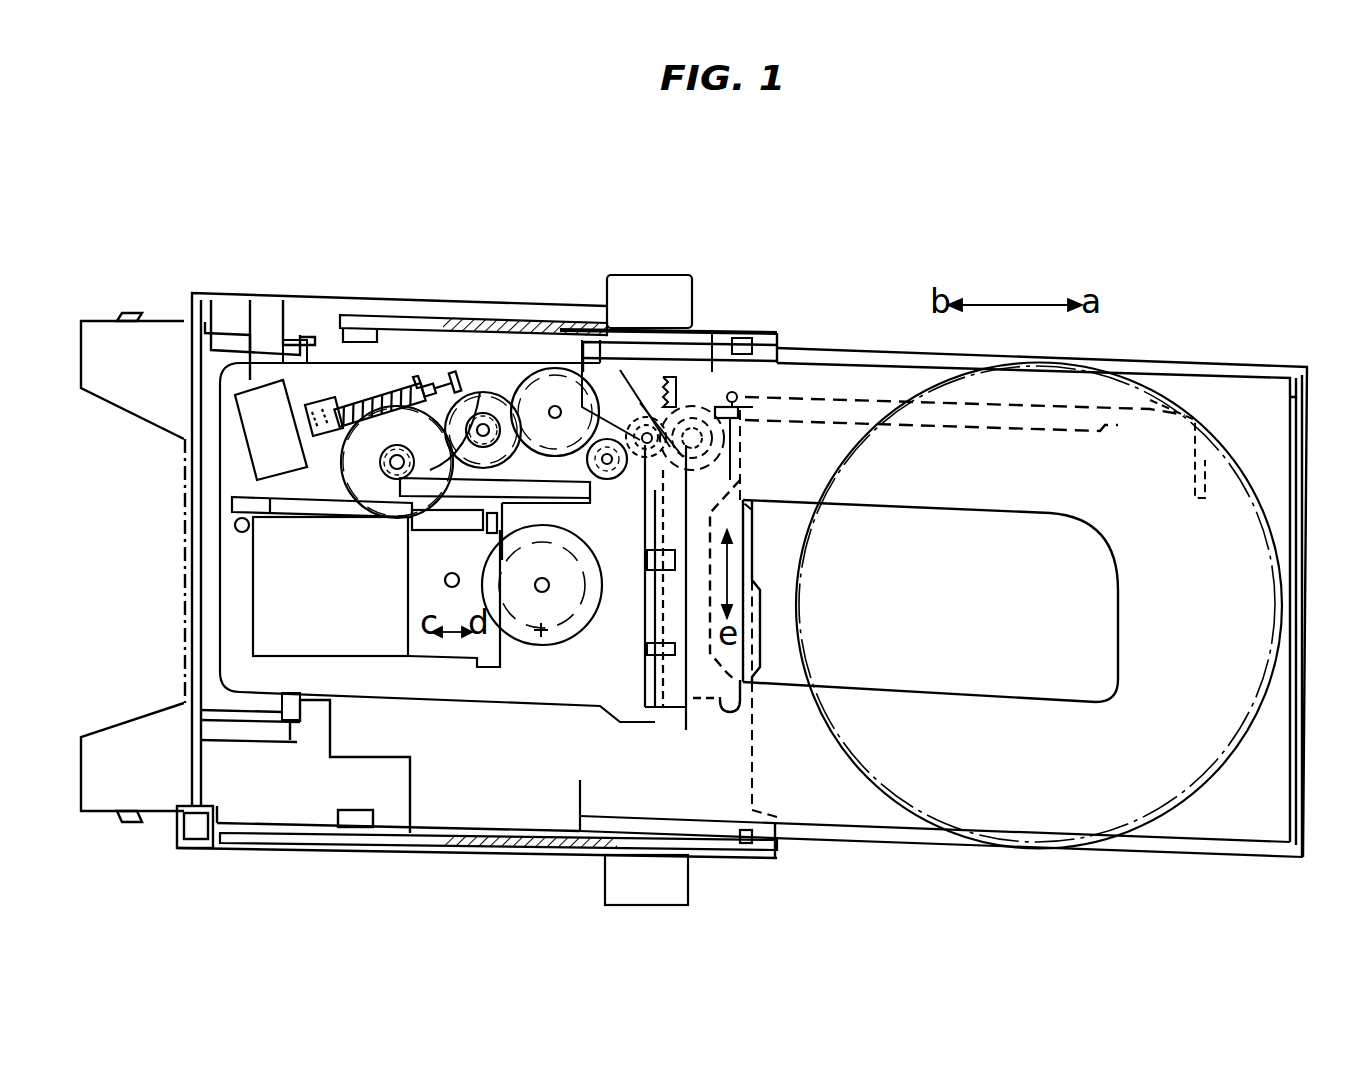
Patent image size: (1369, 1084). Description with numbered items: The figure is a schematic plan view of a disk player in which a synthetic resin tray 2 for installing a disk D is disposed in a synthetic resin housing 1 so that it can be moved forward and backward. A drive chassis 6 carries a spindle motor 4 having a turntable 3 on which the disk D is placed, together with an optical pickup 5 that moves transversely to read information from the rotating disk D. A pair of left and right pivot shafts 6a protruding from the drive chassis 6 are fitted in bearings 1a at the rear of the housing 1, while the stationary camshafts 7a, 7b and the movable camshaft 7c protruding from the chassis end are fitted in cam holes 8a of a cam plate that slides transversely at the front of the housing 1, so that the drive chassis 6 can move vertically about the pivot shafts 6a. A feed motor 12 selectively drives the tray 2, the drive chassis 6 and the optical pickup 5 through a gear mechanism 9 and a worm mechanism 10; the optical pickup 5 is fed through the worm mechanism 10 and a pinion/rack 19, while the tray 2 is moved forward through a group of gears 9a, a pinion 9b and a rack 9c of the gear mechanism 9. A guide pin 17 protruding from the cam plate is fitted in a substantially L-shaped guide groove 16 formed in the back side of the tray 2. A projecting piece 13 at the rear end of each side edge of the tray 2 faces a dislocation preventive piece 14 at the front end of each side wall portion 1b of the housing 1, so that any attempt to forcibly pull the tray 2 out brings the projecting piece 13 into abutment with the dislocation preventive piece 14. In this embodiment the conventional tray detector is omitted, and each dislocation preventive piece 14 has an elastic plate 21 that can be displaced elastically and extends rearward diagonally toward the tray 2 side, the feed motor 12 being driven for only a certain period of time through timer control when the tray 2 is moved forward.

The housing 1 is at (383, 292).
The bearings 1a is at (310, 345).
The side wall portion 1b is at (482, 312).
The tray 2 is at (1222, 352).
The turntable 3 is at (556, 645).
The spindle motor 4 is at (536, 640).
The optical pickup 5 is at (408, 597).
The drive chassis 6 is at (450, 690).
The pivot shafts 6a is at (297, 345).
The stationary camshaft 7a is at (640, 733).
The stationary camshaft 7b is at (647, 558).
The movable camshaft 7c is at (647, 650).
The cam holes 8a is at (650, 588).
The gear mechanism 9 is at (820, 205).
The group of gears 9a is at (606, 440).
The pinion 9b is at (706, 370).
The rack 9c is at (820, 430).
The worm mechanism 10 is at (338, 418).
The feed motor 12 is at (262, 405).
The projecting piece 13 is at (620, 328).
The dislocation preventive piece 14 is at (672, 318).
The guide groove 16 is at (1193, 482).
The guide pin 17 is at (740, 330).
The pinion/rack 19 is at (400, 480).
The elastic plate 21 is at (654, 330).
The disk D is at (1235, 737).